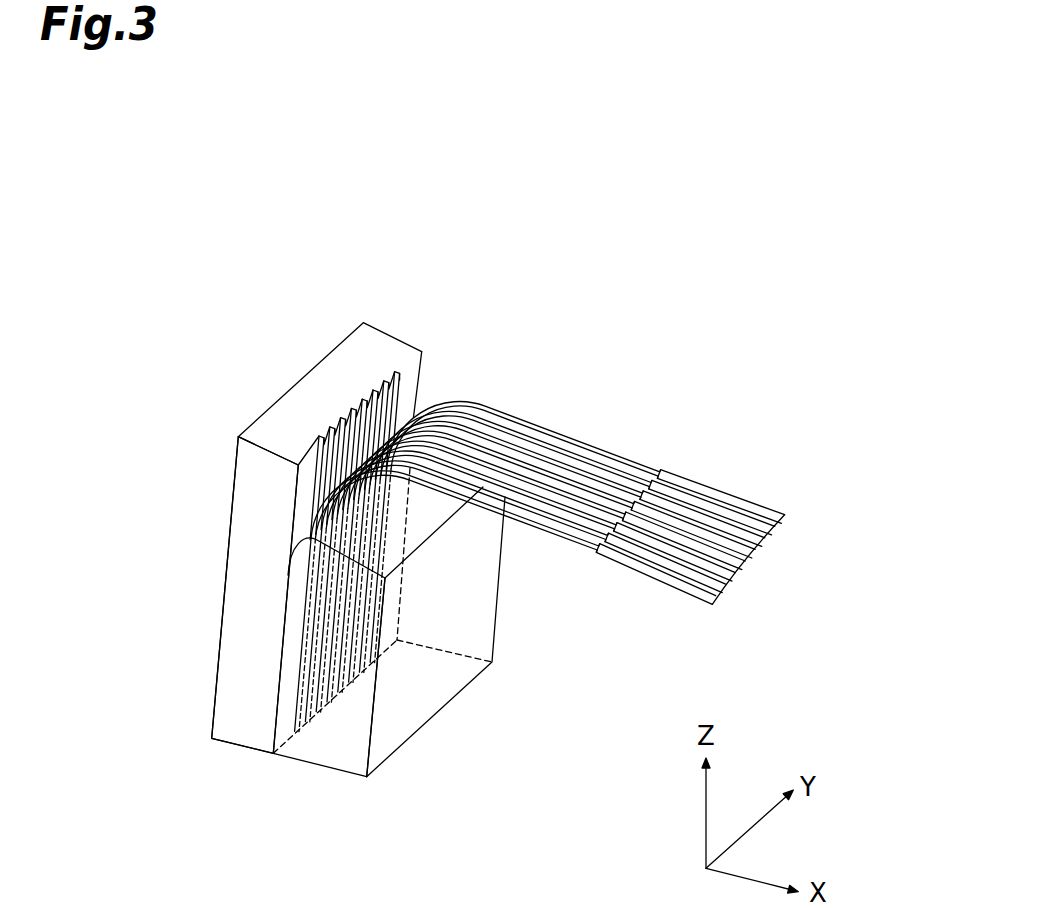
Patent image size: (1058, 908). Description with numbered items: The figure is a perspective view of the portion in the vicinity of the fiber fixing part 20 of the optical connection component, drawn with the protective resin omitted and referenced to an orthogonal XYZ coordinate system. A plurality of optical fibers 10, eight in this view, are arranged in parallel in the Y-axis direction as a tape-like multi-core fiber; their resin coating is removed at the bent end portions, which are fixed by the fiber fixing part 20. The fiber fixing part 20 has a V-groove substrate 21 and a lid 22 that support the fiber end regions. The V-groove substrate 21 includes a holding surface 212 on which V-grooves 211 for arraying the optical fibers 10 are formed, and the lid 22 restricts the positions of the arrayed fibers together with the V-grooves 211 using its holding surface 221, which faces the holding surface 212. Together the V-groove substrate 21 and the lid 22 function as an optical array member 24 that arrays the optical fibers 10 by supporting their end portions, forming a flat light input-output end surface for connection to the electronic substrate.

The optical fiber 10 is at (654, 422).
The fiber fixing part 20 is at (238, 299).
The V-groove substrate 21 is at (213, 700).
The lid 22 is at (437, 718).
The optical array member 24 is at (166, 465).
The V-grooves 211 is at (340, 415).
The holding surface 212 is at (308, 520).
The holding surface 221 is at (275, 722).